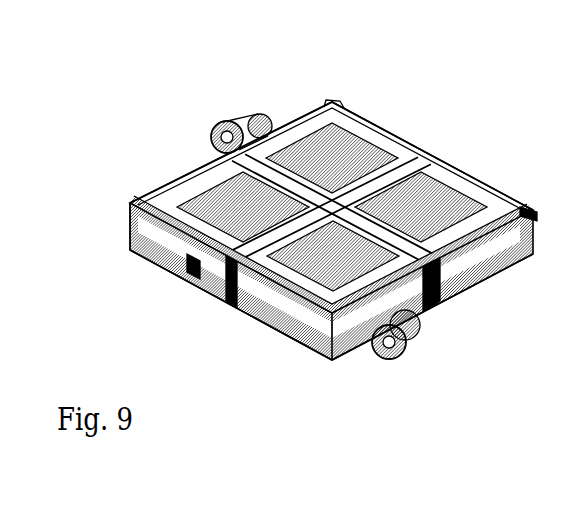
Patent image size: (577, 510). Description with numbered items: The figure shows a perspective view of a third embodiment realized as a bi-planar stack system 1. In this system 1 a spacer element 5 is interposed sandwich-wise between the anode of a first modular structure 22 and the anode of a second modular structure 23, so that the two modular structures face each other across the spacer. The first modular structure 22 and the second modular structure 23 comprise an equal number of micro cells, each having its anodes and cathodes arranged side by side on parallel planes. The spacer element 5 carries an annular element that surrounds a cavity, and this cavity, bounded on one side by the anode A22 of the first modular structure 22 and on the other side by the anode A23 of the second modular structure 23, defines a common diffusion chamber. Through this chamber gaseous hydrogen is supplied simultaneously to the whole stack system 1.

The stack system 1 is at (403, 127).
The first modular structure 22 is at (477, 272).
The second modular structure 23 is at (188, 177).
The anode of the first modular structure A22 is at (197, 270).
The anode of the second modular structure A23 is at (131, 205).
The spacer element 5 is at (188, 270).